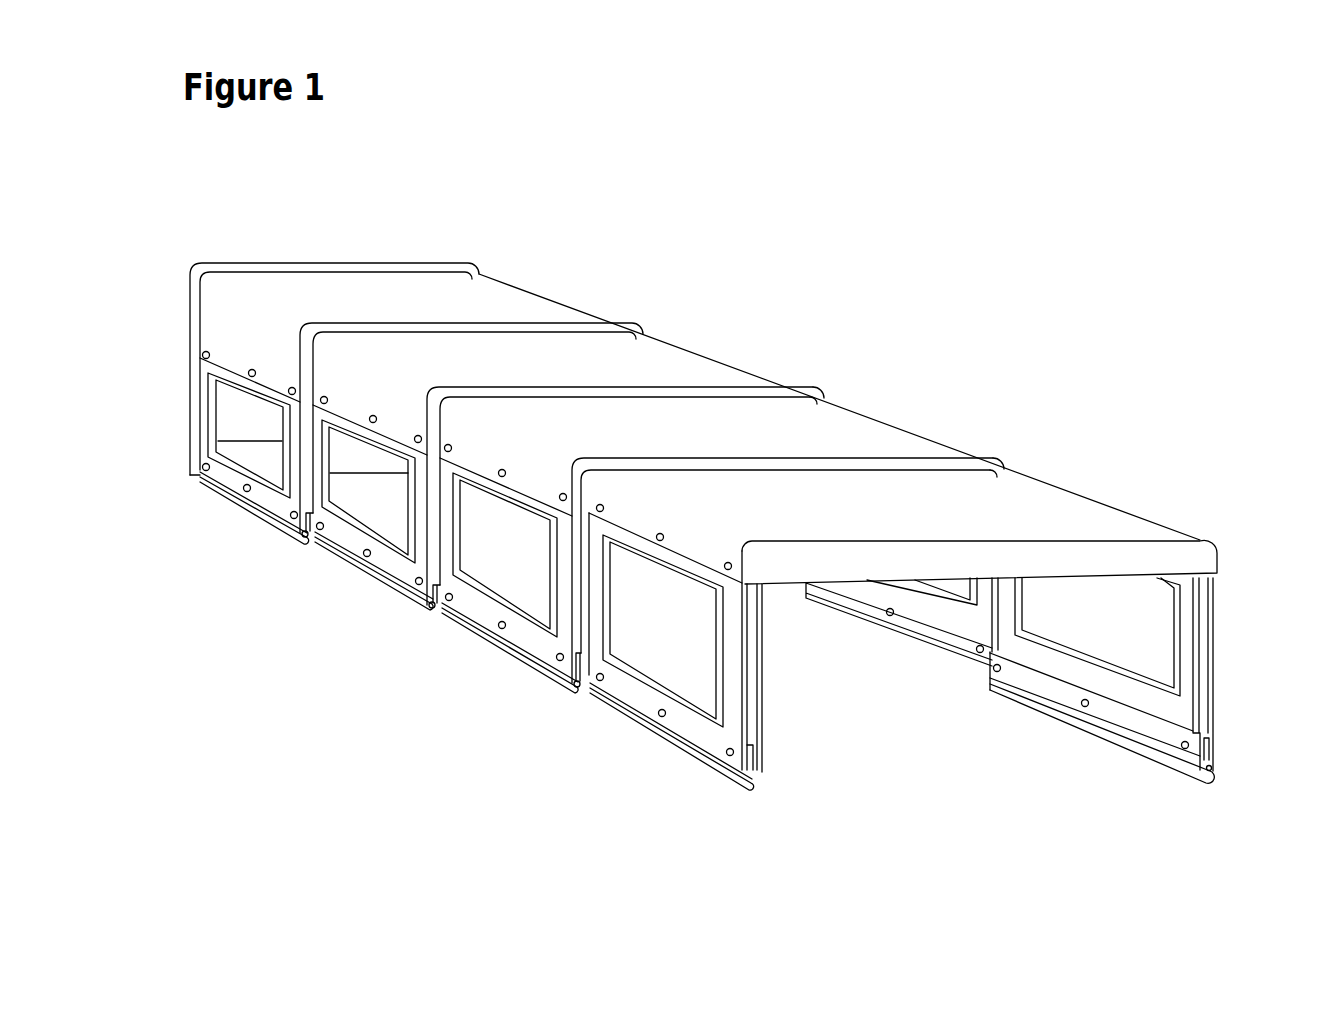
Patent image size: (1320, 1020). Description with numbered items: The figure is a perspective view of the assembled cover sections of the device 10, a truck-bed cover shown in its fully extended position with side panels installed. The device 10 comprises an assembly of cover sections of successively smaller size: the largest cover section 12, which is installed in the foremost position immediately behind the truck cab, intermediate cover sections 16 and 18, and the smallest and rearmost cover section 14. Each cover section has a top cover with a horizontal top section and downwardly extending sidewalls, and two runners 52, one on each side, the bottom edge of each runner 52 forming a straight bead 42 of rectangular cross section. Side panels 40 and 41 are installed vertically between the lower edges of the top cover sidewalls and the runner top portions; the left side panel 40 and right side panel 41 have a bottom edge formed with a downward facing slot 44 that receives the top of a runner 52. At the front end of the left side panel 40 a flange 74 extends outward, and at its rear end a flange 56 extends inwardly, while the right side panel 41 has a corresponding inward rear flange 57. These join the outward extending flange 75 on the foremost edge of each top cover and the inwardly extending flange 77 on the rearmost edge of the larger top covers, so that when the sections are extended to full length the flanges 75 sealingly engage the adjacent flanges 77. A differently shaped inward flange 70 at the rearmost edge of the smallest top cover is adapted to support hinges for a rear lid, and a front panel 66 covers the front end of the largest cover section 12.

The device for adjustably covering a truck cargo bed 10 is at (343, 203).
The largest cover section 12 is at (462, 304).
The intermediate cover section 16 is at (640, 357).
The intermediate cover section 18 is at (788, 432).
The smallest and rearmost cover section 14 is at (987, 508).
The inwardly extending flange 77 is at (808, 393).
The inward flange 70 is at (1190, 553).
The right side panel 41 is at (1185, 634).
The downward facing slot 44 is at (1213, 732).
The runner 52 is at (1210, 758).
The inwardly extending flange 57 is at (1202, 713).
The inwardly extending flange 56 is at (755, 712).
The left side panel 40 is at (698, 731).
The bead 42 is at (745, 783).
The outward extending flange 75 is at (197, 283).
The outward extending flange 74 is at (195, 390).
The front panel 66 is at (250, 447).